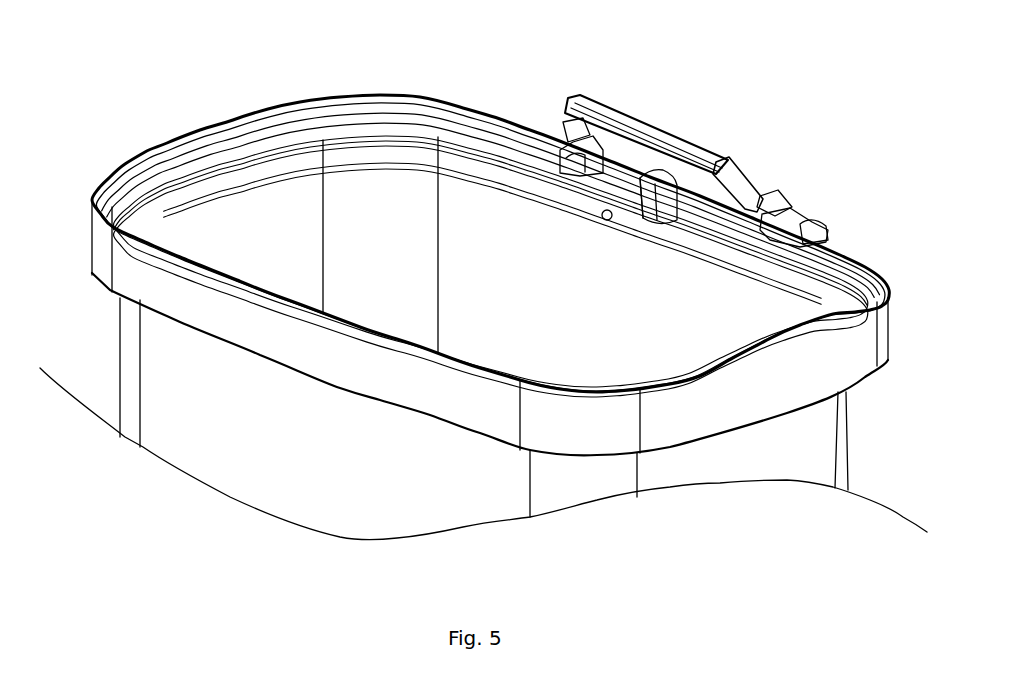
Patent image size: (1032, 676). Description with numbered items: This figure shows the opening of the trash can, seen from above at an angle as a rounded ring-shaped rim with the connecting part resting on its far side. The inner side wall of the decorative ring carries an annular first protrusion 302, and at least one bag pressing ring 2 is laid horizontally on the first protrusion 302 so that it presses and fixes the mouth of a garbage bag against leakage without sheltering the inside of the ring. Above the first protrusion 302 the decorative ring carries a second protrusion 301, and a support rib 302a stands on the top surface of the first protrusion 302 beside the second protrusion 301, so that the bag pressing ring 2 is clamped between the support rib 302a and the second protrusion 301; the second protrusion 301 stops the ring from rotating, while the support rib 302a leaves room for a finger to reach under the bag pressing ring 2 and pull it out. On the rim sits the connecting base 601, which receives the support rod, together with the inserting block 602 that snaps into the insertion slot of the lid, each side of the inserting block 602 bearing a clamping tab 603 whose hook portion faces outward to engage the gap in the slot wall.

The bag pressing ring 2 is at (360, 140).
The second protrusion 301 is at (240, 163).
The first protrusion 302 is at (130, 223).
The support rib 302a is at (180, 152).
The connecting base 601 is at (640, 170).
The inserting block 602 is at (665, 138).
The clamping tab 603 is at (757, 182).